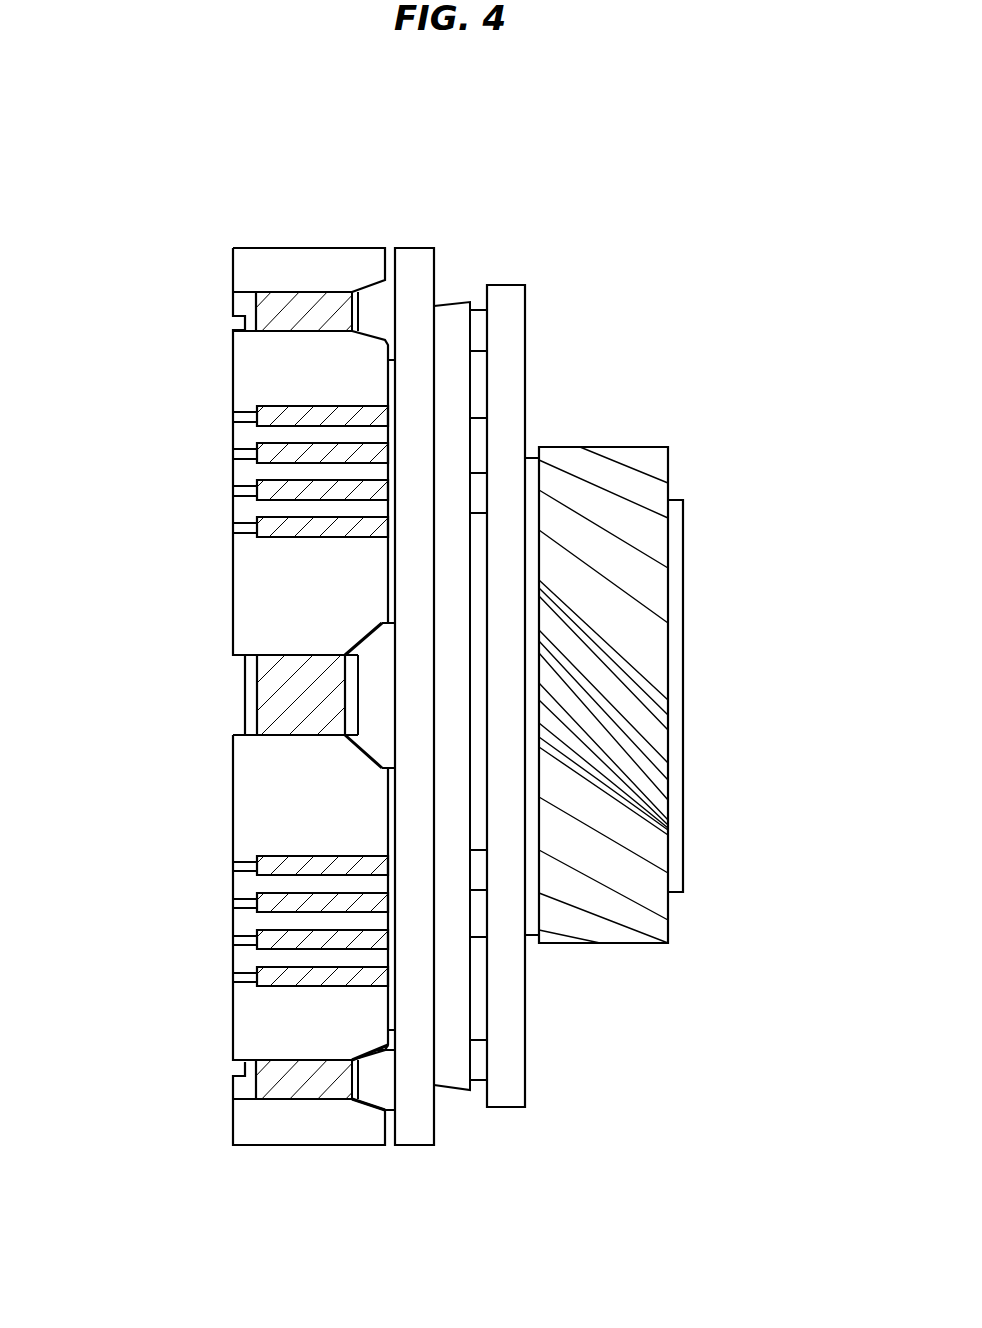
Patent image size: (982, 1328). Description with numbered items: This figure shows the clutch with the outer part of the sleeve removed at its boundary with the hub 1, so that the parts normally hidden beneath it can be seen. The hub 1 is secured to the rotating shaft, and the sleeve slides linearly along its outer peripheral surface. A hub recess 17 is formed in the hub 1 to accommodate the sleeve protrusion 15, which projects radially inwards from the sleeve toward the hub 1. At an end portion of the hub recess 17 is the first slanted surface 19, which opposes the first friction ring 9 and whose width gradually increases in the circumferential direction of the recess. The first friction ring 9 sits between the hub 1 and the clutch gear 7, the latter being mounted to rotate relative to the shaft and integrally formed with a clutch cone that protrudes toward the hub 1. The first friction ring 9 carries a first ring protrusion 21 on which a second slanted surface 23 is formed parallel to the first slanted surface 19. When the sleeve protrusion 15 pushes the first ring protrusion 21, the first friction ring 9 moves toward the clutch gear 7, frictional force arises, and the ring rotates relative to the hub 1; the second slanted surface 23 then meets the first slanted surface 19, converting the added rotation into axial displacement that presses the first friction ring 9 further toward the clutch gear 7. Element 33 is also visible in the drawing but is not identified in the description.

The hub 1 is at (242, 556).
The sleeve protrusion 15 is at (290, 300).
The first ring protrusion 21 is at (380, 312).
The first friction ring 9 is at (417, 292).
The hub recess 17 is at (238, 322).
The second slanted surface 23 is at (378, 626).
The first slanted surface 19 is at (380, 767).
The clutch gear 7 is at (632, 832).
The bearing plate 33 is at (455, 1010).